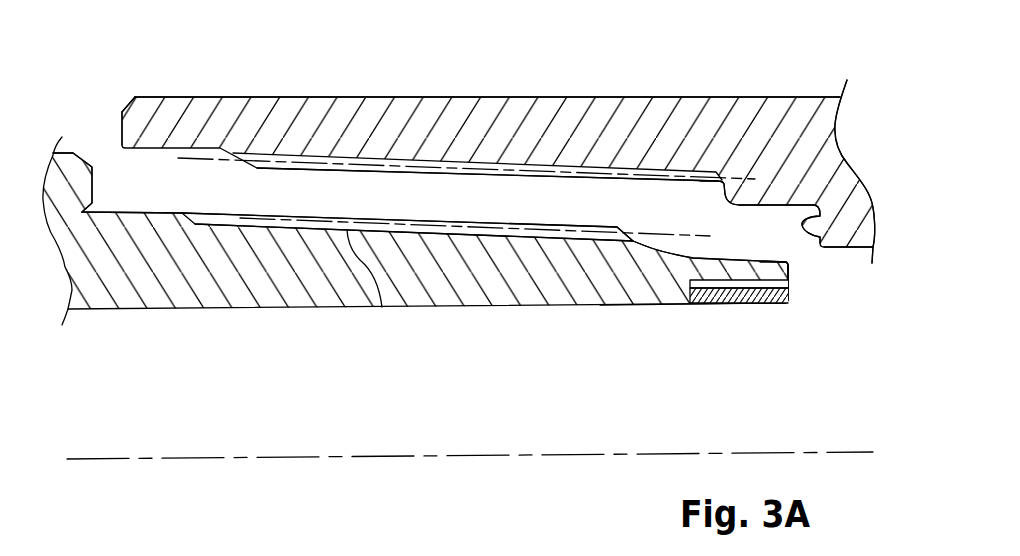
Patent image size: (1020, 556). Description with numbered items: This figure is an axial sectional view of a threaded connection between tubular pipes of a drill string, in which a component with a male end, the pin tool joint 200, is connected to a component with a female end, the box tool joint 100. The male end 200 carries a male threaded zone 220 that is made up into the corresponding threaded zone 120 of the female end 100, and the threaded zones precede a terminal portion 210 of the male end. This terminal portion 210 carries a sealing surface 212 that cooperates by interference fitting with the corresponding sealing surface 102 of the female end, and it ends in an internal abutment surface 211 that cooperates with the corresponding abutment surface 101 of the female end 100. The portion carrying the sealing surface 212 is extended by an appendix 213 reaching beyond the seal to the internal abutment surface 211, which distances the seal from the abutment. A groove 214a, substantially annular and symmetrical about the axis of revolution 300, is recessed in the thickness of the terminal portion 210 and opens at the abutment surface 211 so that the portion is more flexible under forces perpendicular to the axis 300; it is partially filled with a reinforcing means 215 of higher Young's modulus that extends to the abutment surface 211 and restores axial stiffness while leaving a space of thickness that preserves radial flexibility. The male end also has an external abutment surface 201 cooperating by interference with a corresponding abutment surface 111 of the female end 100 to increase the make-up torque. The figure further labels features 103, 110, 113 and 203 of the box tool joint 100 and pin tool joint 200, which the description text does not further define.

The box tool joint 100 is at (754, 84).
The abutment surface 101 is at (822, 213).
The sealing surface 102 is at (743, 203).
The groove of first member 103 is at (803, 204).
The body of first member 110 is at (155, 108).
The abutment surface 111 is at (122, 128).
The chamfer 113 is at (122, 112).
The threaded zone 120 is at (392, 160).
The pin tool joint 200 is at (181, 341).
The external abutment surface 201 is at (93, 183).
The flange 203 is at (89, 153).
The terminal portion 210 is at (666, 352).
The internal abutment surface 211 is at (782, 283).
The sealing surface 212 is at (697, 242).
The appendix 213 is at (790, 268).
The groove 214a is at (758, 284).
The reinforcing means 215 is at (707, 303).
The male threaded zone 220 is at (382, 307).
The axis 300 is at (823, 452).